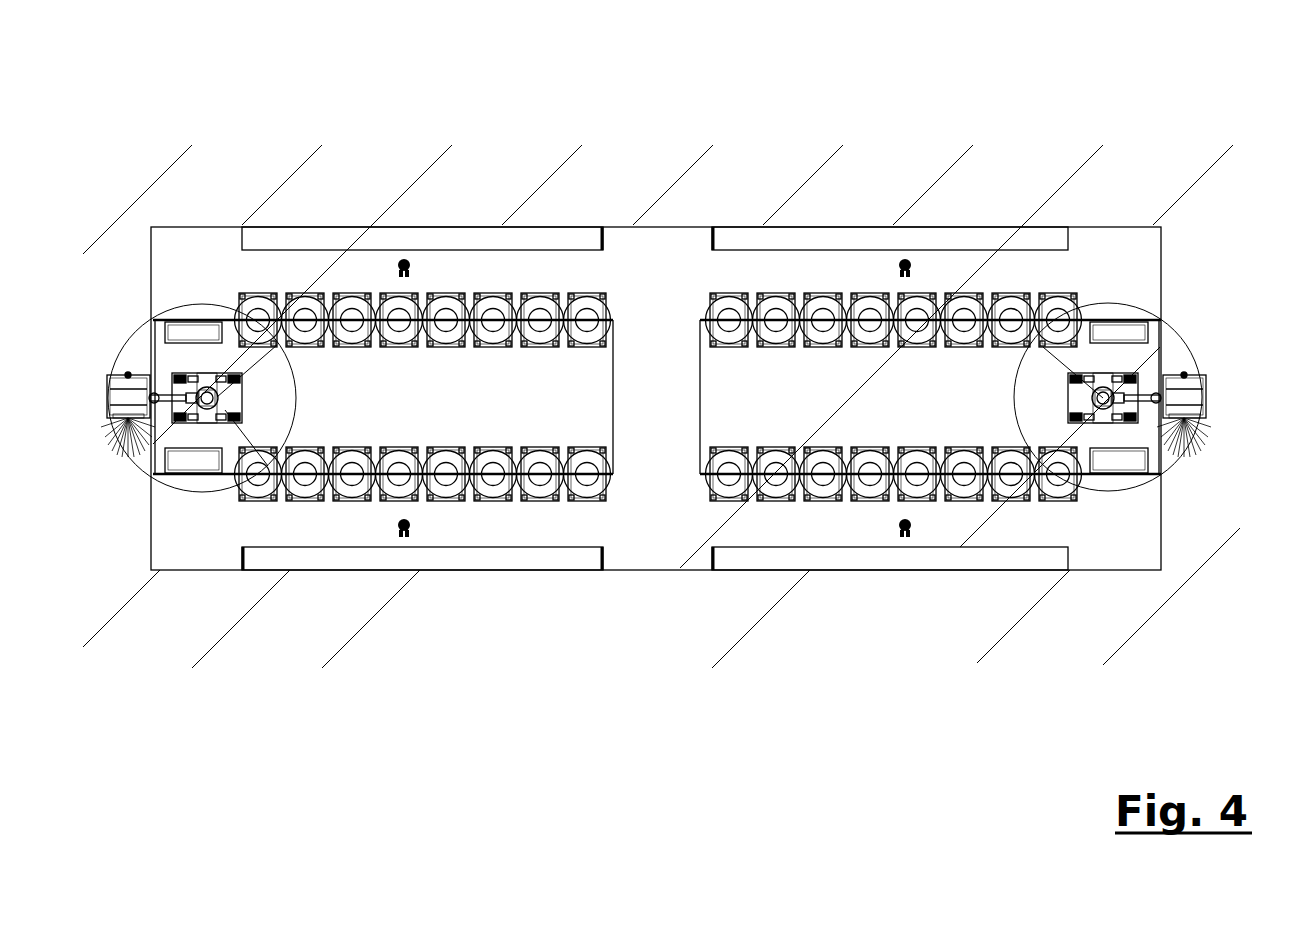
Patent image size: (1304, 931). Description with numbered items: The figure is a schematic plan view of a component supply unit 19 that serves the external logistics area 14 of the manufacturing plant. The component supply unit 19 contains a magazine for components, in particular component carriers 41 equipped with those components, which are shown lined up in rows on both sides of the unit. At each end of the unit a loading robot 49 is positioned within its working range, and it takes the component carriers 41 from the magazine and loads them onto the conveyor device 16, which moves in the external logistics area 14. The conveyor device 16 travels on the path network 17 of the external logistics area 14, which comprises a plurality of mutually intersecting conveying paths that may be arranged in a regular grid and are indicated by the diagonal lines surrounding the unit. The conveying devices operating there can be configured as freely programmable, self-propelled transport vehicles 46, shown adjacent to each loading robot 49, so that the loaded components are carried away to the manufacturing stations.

The external logistics area 14 is at (125, 298).
The conveyor device 16 is at (655, 398).
The path network 17 is at (238, 165).
The component supply unit 19 is at (306, 598).
The component carrier 41 is at (358, 345).
The transport vehicle 46 is at (123, 402).
The loading robot 49 is at (1095, 400).